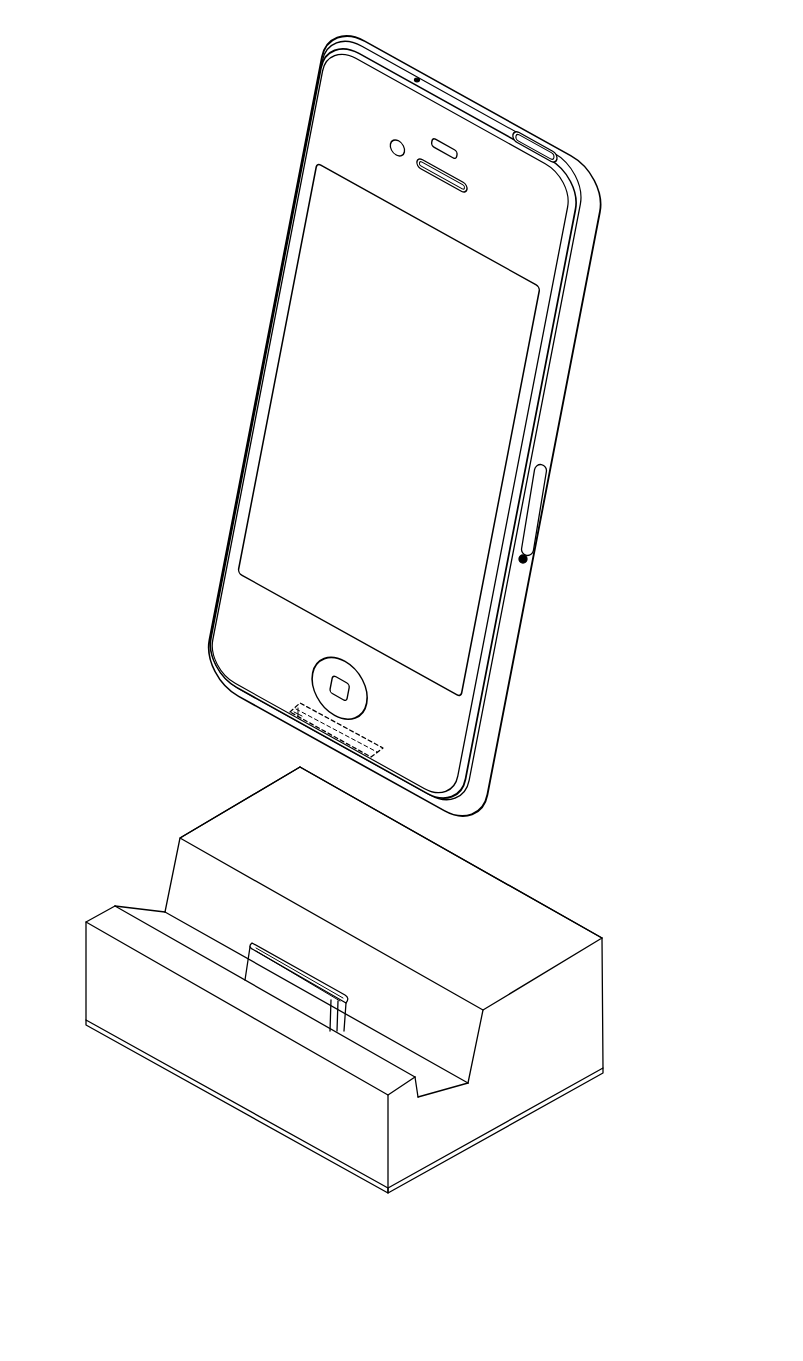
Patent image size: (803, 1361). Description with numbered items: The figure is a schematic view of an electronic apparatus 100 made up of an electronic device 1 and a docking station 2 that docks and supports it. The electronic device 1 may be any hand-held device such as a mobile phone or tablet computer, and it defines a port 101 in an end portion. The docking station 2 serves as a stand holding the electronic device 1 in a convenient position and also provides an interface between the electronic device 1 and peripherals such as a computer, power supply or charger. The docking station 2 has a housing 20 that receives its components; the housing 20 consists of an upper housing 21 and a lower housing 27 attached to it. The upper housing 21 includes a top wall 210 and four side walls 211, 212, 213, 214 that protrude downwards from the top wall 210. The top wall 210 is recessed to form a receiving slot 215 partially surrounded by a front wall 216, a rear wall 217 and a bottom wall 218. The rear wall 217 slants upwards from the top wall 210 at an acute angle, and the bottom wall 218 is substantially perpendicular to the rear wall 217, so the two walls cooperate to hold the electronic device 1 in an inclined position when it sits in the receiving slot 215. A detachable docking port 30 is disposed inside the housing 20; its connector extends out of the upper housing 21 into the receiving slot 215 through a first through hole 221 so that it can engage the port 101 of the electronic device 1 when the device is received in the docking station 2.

The electronic apparatus 100 is at (386, 31).
The electronic device 1 is at (542, 121).
The port 101 is at (290, 720).
The docking station 2 is at (557, 886).
The housing 20 is at (677, 1003).
The upper housing 21 is at (582, 1012).
The lower housing 27 is at (585, 1070).
The top wall 210 is at (553, 938).
The side wall 211 is at (138, 1017).
The side wall 212 is at (460, 855).
The side wall 213 is at (540, 1060).
The side wall 214 is at (230, 808).
The receiving slot 215 is at (556, 1166).
The front wall 216 is at (423, 1097).
The rear wall 217 is at (458, 1032).
The bottom wall 218 is at (432, 1070).
The first through hole 221 is at (343, 1030).
The docking port 30 is at (290, 985).